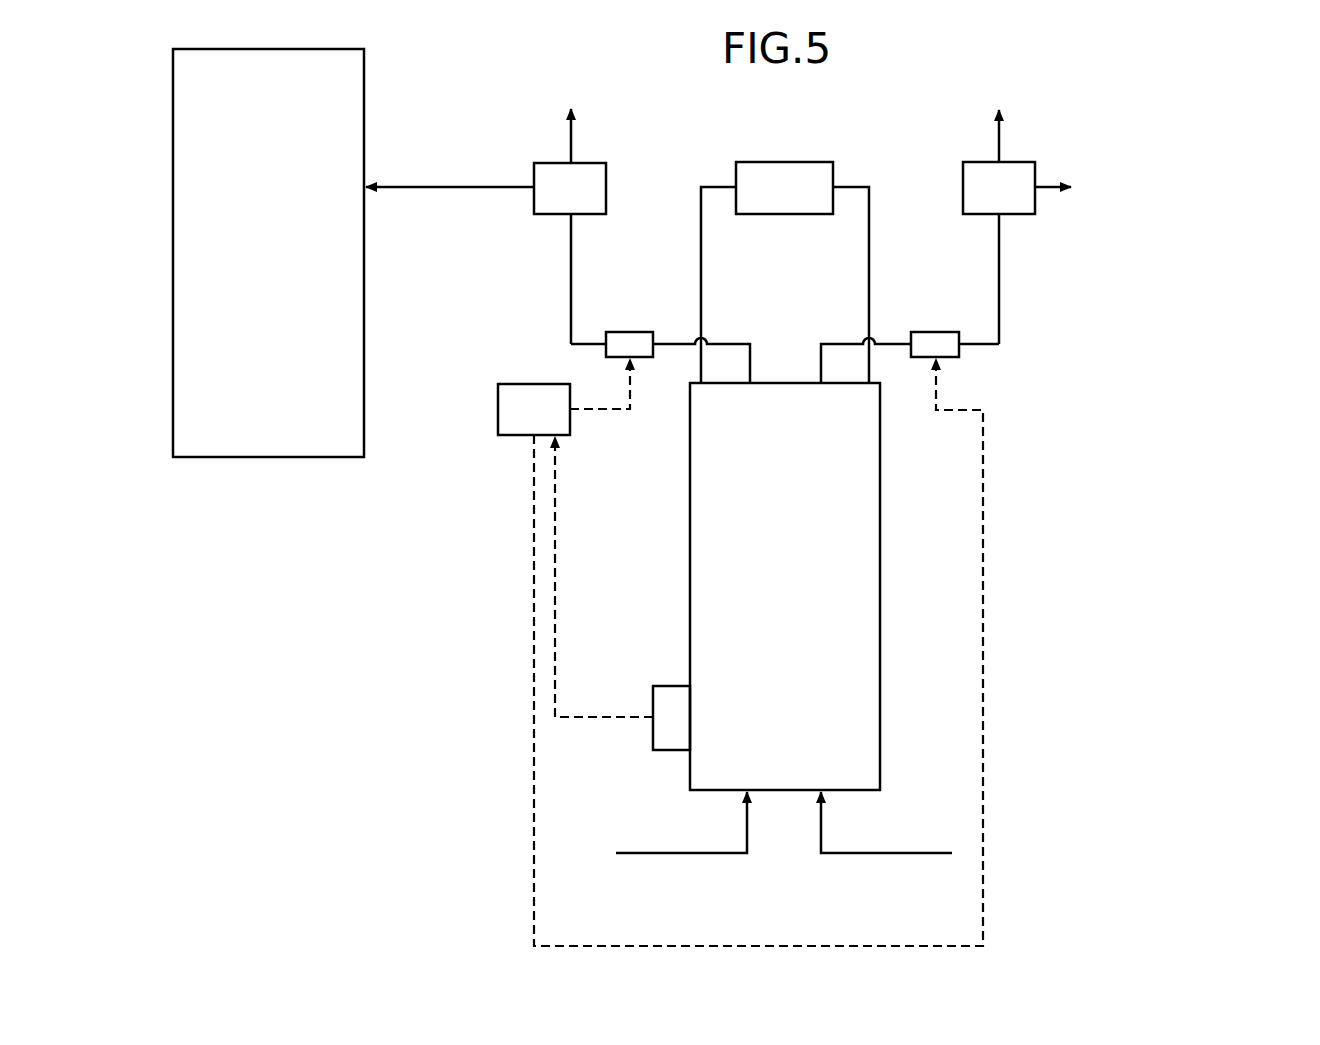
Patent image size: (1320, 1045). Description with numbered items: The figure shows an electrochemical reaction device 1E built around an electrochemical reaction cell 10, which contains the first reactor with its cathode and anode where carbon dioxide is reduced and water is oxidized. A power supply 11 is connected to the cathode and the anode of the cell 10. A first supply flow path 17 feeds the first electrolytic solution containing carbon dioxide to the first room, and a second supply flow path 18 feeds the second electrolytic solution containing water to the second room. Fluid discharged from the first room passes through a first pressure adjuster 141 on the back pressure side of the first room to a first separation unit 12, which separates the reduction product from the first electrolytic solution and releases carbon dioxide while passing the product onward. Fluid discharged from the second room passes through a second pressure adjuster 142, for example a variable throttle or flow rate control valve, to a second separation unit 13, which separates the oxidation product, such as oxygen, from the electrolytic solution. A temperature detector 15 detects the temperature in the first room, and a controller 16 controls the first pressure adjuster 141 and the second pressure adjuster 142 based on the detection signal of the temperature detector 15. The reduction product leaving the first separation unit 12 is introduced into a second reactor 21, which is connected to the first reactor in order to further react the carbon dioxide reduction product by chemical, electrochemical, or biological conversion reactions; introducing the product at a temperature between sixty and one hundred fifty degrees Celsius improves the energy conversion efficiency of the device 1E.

The electrochemical reaction device 1E is at (881, 108).
The electrochemical reaction cell 10 is at (787, 810).
The power supply 11 is at (762, 162).
The first separation unit 12 is at (547, 163).
The second separation unit 13 is at (1023, 162).
The first pressure adjuster 141 is at (645, 357).
The second pressure adjuster 142 is at (950, 357).
The temperature detector 15 is at (653, 698).
The controller 16 is at (498, 412).
The first supply flow path 17 is at (689, 853).
The second supply flow path 18 is at (878, 853).
The second reactor 21 is at (270, 457).